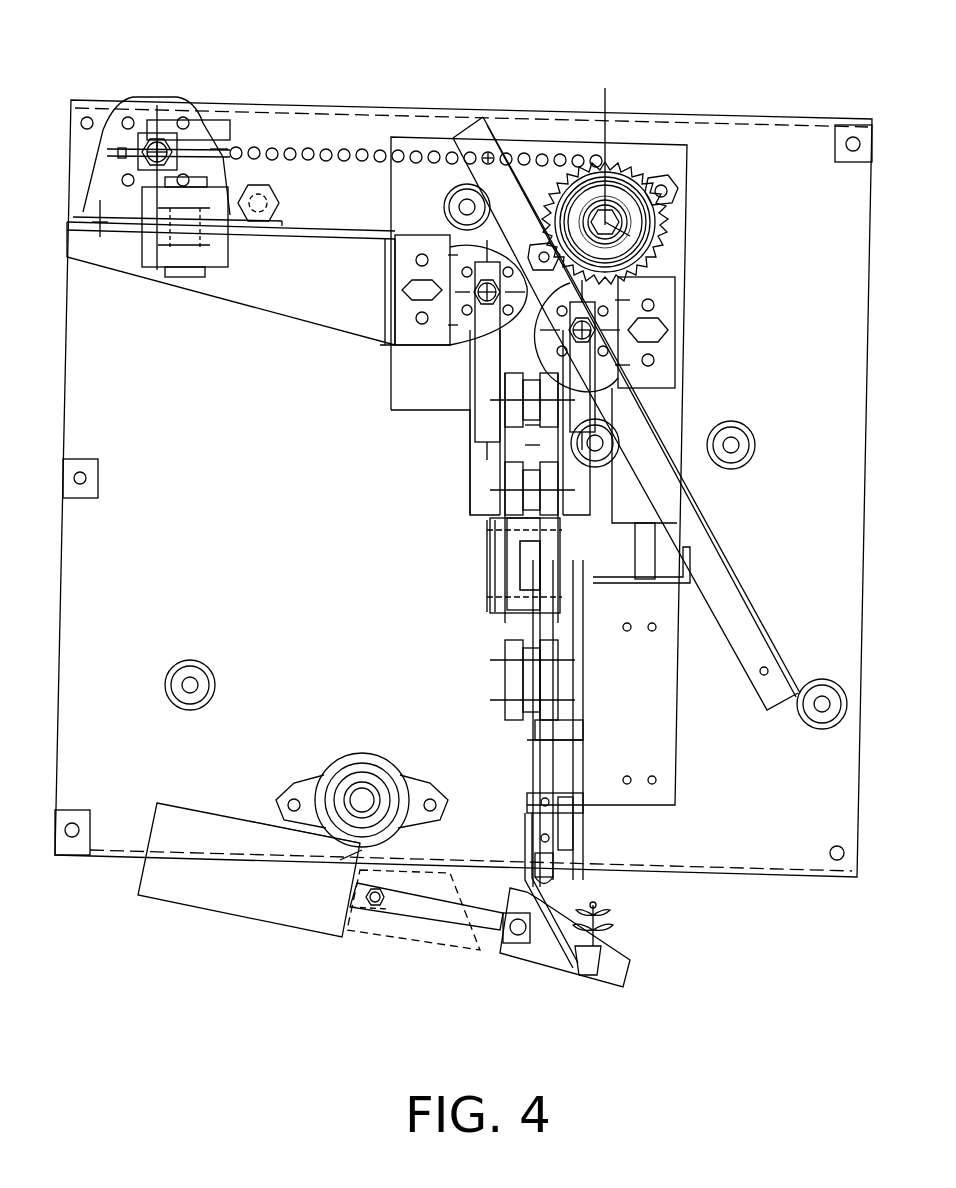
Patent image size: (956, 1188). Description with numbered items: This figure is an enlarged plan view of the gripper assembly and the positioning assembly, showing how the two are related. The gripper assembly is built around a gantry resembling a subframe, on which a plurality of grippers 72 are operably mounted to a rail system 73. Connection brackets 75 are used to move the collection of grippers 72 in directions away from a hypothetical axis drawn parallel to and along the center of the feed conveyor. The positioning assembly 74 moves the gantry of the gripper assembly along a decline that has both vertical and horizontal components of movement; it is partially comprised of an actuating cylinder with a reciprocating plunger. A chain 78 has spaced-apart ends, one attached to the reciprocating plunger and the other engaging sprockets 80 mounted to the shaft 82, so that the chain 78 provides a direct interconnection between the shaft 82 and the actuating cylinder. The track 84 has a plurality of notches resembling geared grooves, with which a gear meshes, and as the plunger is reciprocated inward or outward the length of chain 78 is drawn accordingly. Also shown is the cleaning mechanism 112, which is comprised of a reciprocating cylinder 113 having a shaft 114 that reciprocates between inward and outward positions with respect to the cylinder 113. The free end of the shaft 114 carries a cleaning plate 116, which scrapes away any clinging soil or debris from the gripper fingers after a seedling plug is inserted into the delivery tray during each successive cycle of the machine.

The grippers 72 is at (540, 746).
The rail system 73 is at (523, 552).
The positioning assembly 74 is at (470, 130).
The connection brackets 75 is at (515, 598).
The chain 78 is at (328, 150).
The sprockets 80 is at (244, 150).
The shaft 82 is at (662, 236).
The track 84 is at (690, 533).
The cleaning mechanism 112 is at (302, 904).
The reciprocating cylinder 113 is at (222, 893).
The shaft 114 is at (457, 915).
The cleaning plate 116 is at (546, 960).